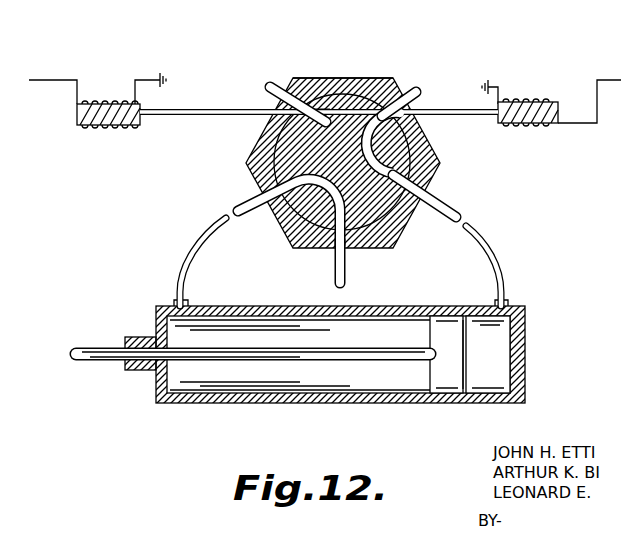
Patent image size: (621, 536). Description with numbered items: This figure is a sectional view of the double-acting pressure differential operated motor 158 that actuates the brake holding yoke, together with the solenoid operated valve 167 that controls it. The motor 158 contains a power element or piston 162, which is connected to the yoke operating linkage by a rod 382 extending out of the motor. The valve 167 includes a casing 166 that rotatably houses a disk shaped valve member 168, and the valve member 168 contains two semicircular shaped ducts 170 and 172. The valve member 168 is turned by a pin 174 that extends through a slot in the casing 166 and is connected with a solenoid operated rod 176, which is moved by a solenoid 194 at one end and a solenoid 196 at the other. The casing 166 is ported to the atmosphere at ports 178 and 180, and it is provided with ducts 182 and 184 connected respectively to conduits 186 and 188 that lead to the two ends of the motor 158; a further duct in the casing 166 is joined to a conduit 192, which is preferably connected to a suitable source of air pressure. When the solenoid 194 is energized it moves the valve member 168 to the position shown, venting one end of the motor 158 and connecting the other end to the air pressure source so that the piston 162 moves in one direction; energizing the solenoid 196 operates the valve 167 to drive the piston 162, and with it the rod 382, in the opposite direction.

The pressure differential operated motor 158 is at (223, 404).
The power element 162 is at (443, 375).
The casing 166 is at (430, 150).
The valve 167 is at (319, 147).
The valve member 168 is at (290, 147).
The semicircular shaped duct 170 is at (284, 214).
The semicircular shaped duct 172 is at (344, 78).
The pin 174 is at (316, 108).
The solenoid operated rod 176 is at (193, 109).
The port 178 is at (277, 88).
The port 180 is at (410, 88).
The duct 182 is at (440, 198).
The duct 184 is at (262, 185).
The conduit 186 is at (494, 252).
The conduit 188 is at (193, 258).
The conduit 192 is at (345, 266).
The solenoid 194 is at (96, 103).
The solenoid 196 is at (550, 103).
The rod 382 is at (187, 352).